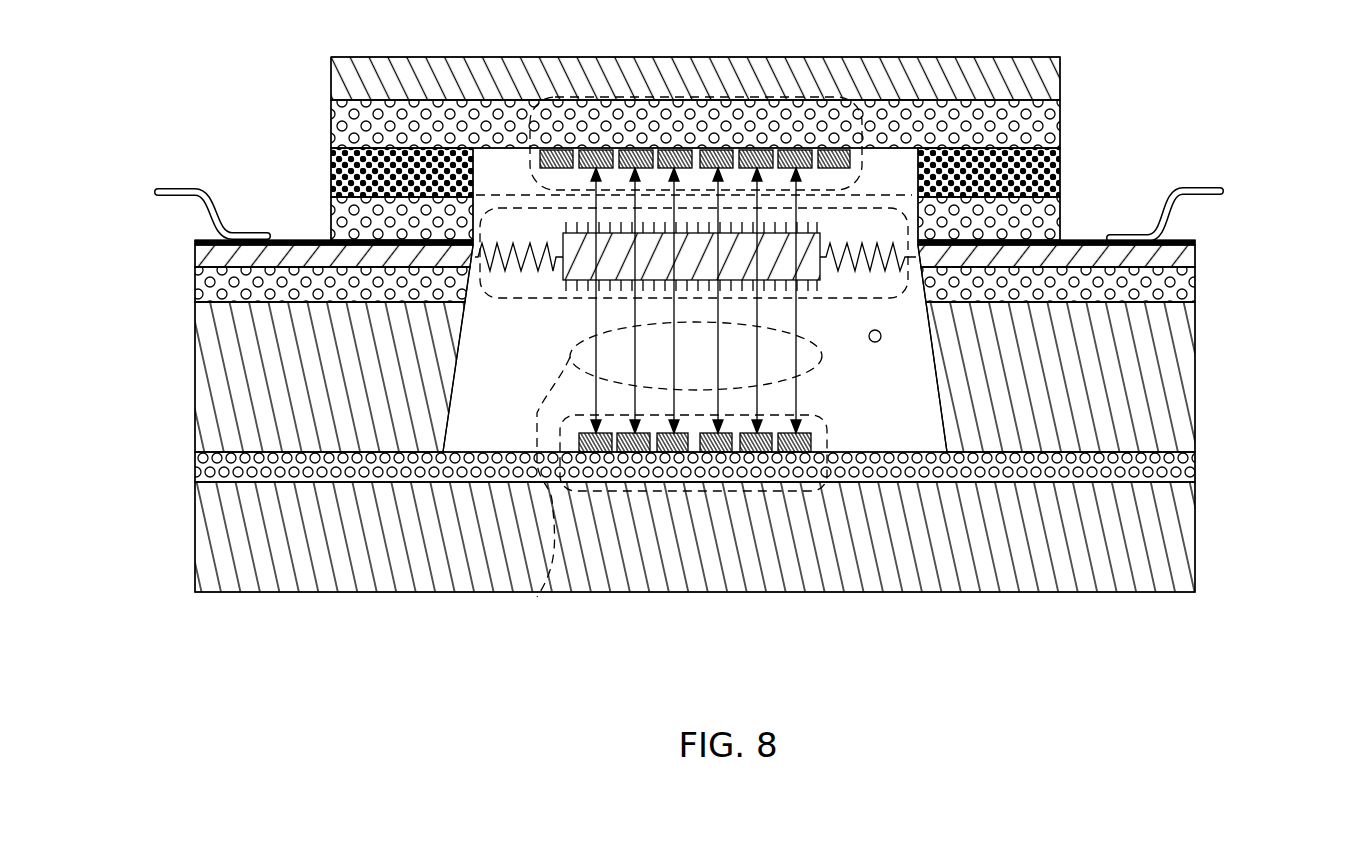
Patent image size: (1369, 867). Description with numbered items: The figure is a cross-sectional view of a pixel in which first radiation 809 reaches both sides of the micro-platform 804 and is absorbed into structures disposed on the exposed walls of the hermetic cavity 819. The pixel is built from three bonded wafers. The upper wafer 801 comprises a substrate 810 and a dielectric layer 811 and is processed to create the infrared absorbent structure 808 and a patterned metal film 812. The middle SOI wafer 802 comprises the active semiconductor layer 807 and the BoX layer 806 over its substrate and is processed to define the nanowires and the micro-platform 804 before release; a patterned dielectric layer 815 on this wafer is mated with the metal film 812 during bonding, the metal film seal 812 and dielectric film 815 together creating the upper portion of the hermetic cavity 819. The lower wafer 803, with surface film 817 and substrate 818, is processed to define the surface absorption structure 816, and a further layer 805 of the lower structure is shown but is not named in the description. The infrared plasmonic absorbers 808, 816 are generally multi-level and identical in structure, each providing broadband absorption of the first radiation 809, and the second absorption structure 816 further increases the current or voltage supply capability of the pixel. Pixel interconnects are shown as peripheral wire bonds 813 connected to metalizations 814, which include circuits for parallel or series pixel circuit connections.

The wafer 801 is at (323, 58).
The SOI wafer 802 is at (150, 245).
The wafer 803 is at (150, 456).
The micro-platform 804 is at (510, 300).
The substrate body 805 is at (1195, 342).
The BoX layer 806 is at (1195, 285).
The active semiconductor layer 807 is at (1195, 258).
The infrared absorbent structure 808 is at (685, 97).
The first radiation 809 is at (520, 195).
The substrate 810 is at (1060, 78).
The dielectric layer 811 is at (1060, 125).
The patterned metal film 812 is at (1060, 165).
The peripheral wire bonds 813 is at (1222, 195).
The metalizations 814 is at (1193, 237).
The patterned dielectric layer 815 is at (1060, 212).
The surface absorption structure 816 is at (716, 491).
The surface film 817 is at (1195, 465).
The substrate 818 is at (1195, 542).
The hermetic cavity 819 is at (875, 343).